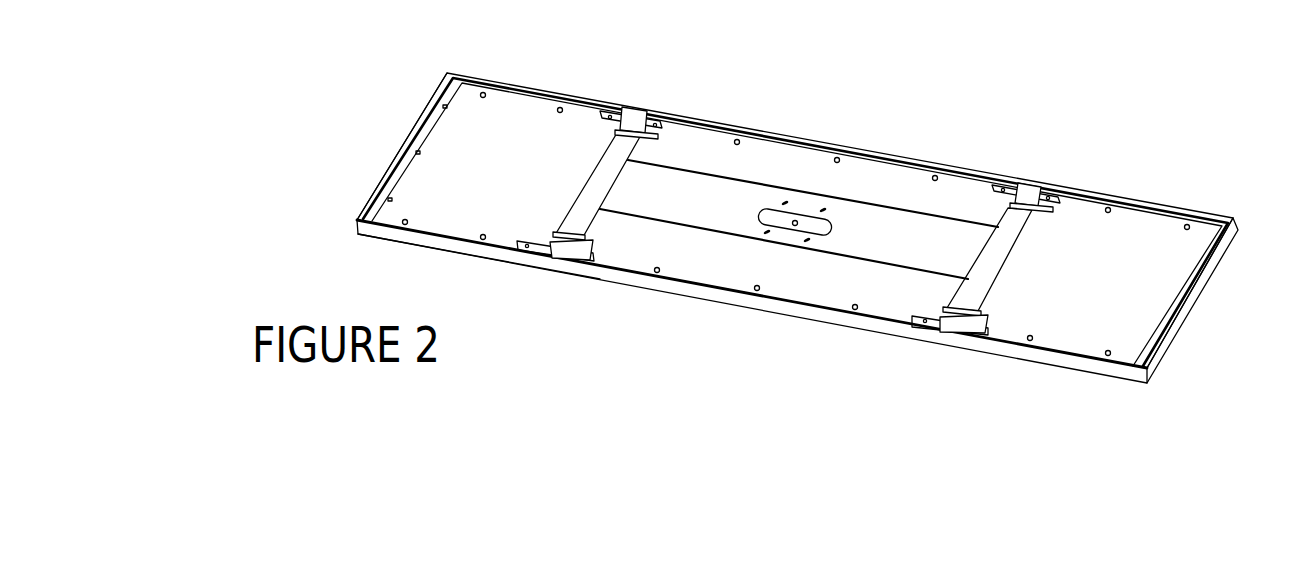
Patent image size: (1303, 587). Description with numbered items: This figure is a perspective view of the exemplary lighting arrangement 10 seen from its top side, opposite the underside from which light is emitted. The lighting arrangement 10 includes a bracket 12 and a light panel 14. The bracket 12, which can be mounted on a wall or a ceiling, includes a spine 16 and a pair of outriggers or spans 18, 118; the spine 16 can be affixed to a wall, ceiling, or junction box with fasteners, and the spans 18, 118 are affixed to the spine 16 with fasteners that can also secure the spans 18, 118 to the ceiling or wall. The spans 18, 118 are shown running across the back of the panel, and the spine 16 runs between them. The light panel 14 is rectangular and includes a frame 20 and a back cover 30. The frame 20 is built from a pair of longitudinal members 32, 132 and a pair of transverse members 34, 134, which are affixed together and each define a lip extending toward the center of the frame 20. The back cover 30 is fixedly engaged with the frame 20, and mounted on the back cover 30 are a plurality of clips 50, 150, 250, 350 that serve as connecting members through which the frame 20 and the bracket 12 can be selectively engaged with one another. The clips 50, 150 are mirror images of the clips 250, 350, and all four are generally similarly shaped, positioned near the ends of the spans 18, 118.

The lighting arrangement 10 is at (642, 335).
The bracket 12 is at (760, 100).
The light panel 14 is at (540, 335).
The spine 16 is at (900, 243).
The span 18 is at (597, 180).
The frame 20 is at (425, 256).
The back cover 30 is at (1167, 225).
The longitudinal member 32 is at (813, 313).
The transverse member 34 is at (402, 147).
The clip 50 is at (627, 87).
The span 118 is at (990, 263).
The longitudinal member 132 is at (871, 152).
The transverse member 134 is at (1168, 335).
The clip 150 is at (1043, 168).
The clip 250 is at (930, 350).
The clip 350 is at (550, 270).